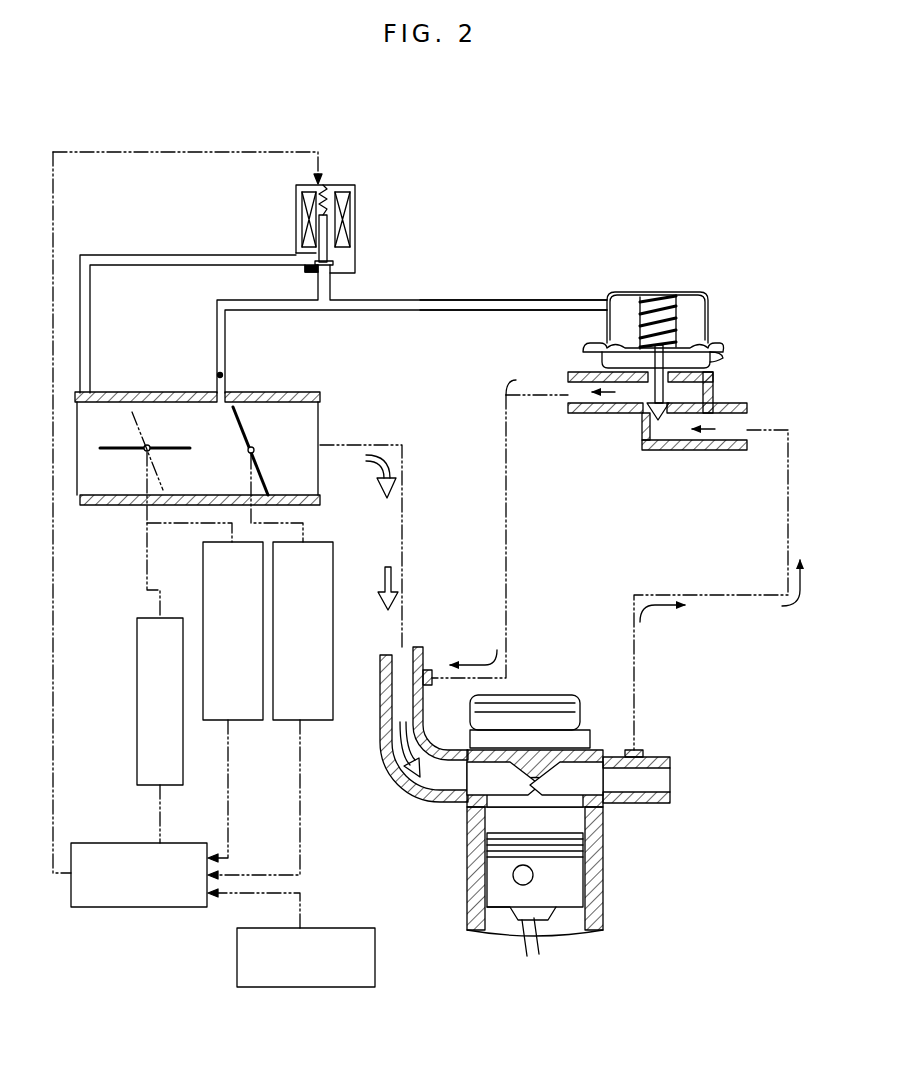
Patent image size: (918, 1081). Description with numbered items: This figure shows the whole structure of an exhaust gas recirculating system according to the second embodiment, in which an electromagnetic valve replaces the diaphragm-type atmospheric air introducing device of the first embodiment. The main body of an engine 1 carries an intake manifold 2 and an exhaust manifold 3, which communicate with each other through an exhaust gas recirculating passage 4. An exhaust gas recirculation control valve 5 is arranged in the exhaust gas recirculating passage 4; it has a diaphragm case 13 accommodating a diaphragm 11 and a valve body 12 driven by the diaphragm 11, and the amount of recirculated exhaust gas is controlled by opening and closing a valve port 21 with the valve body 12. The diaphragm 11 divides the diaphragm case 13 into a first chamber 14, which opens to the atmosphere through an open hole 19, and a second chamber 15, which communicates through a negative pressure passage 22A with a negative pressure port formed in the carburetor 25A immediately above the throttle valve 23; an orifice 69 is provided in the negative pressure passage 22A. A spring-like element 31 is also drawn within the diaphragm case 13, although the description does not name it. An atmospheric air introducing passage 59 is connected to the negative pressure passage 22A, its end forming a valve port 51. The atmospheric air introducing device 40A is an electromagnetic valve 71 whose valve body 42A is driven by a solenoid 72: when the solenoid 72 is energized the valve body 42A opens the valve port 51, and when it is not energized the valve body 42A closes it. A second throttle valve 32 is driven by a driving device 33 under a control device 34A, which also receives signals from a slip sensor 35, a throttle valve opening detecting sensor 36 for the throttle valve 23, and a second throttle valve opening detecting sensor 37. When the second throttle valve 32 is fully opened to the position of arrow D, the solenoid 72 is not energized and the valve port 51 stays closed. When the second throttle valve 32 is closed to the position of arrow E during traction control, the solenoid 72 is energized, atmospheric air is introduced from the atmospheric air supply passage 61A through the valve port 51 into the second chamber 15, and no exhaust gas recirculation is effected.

The main body of an engine 1 is at (590, 912).
The intake manifold 2 is at (440, 795).
The exhaust manifold 3 is at (635, 803).
The exhaust gas recirculating passage 4 is at (700, 450).
The exhaust gas recirculation control valve 5 is at (651, 363).
The diaphragm 11 is at (705, 335).
The valve body 12 is at (640, 413).
The diaphragm case 13 is at (672, 300).
The first chamber 14 is at (610, 357).
The second chamber 15 is at (620, 323).
The open hole 19 is at (716, 360).
The valve port 21 is at (660, 420).
The negative pressure passage 22A is at (532, 300).
The throttle valve 23 is at (243, 427).
The carburetor 25A is at (310, 503).
The compression spring 31 is at (633, 302).
The second throttle valve 32 is at (105, 455).
The driving device 33 is at (137, 733).
The control device 34A is at (80, 843).
The slip sensor 35 is at (375, 967).
The throttle valve opening detecting sensor 36 is at (323, 722).
The second throttle valve opening detecting sensor 37 is at (247, 722).
The atmospheric air introducing device 40A is at (376, 205).
The valve body 42A is at (335, 262).
The valve port 51 is at (305, 270).
The atmospheric air introducing passage 59 is at (330, 292).
The atmospheric air supply passage 61A is at (197, 255).
The orifice 69 is at (222, 375).
The electromagnetic valve 71 is at (340, 185).
The solenoid 72 is at (342, 237).
The arrow D is at (127, 455).
The arrow E is at (138, 396).